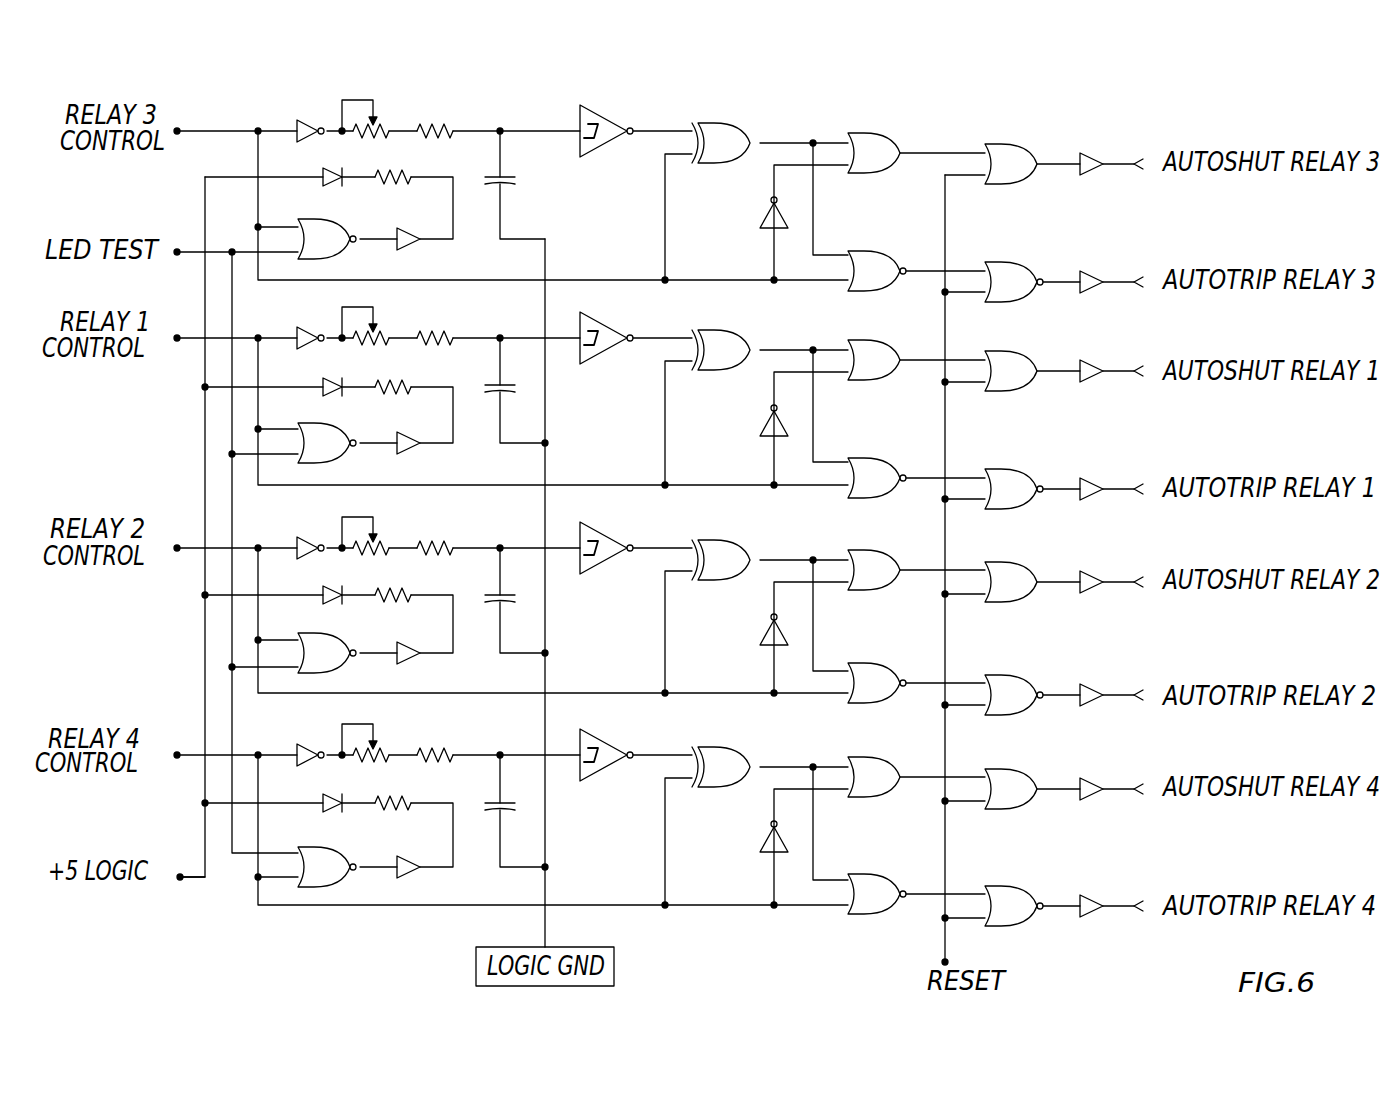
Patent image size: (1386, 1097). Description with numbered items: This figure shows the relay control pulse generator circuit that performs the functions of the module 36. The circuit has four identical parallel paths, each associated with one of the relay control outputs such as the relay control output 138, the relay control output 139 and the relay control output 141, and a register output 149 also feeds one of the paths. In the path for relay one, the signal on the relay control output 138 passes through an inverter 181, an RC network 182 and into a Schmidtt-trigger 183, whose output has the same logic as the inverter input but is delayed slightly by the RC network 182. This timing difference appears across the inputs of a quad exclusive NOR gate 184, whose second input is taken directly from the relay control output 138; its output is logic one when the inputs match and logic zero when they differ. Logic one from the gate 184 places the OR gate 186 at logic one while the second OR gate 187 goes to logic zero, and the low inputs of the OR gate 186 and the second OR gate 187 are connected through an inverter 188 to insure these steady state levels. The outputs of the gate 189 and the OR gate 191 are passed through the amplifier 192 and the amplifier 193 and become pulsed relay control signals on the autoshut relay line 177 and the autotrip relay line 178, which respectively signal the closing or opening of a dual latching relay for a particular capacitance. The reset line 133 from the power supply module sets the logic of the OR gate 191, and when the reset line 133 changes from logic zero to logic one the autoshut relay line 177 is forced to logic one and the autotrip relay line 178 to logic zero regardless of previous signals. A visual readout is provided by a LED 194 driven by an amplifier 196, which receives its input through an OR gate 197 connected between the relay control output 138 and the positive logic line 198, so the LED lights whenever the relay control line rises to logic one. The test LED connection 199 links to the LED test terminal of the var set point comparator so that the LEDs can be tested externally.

The module 36 is at (821, 112).
The reset line 133 is at (945, 940).
The relay control output 138 is at (193, 343).
The relay control output 139 is at (193, 553).
The relay control output 141 is at (191, 760).
The register output 149 is at (193, 128).
The autoshut relay line 177 is at (1120, 369).
The autotrip relay line 178 is at (1120, 486).
The inverter 181 is at (300, 328).
The RC network 182 is at (443, 332).
The Schmidtt-trigger 183 is at (597, 326).
The quad exclusive NOR gate 184 is at (722, 336).
The OR gate 186 is at (874, 345).
The second OR gate 187 is at (872, 458).
The inverter 188 is at (760, 426).
The gate 189 is at (1004, 355).
The OR gate 191 is at (1002, 472).
The amplifier 192 is at (1093, 380).
The amplifier 193 is at (1093, 498).
The LED 194 is at (338, 393).
The amplifier 196 is at (418, 449).
The OR gate 197 is at (322, 464).
The positive logic line 198 is at (193, 882).
The test LED connection 199 is at (190, 256).